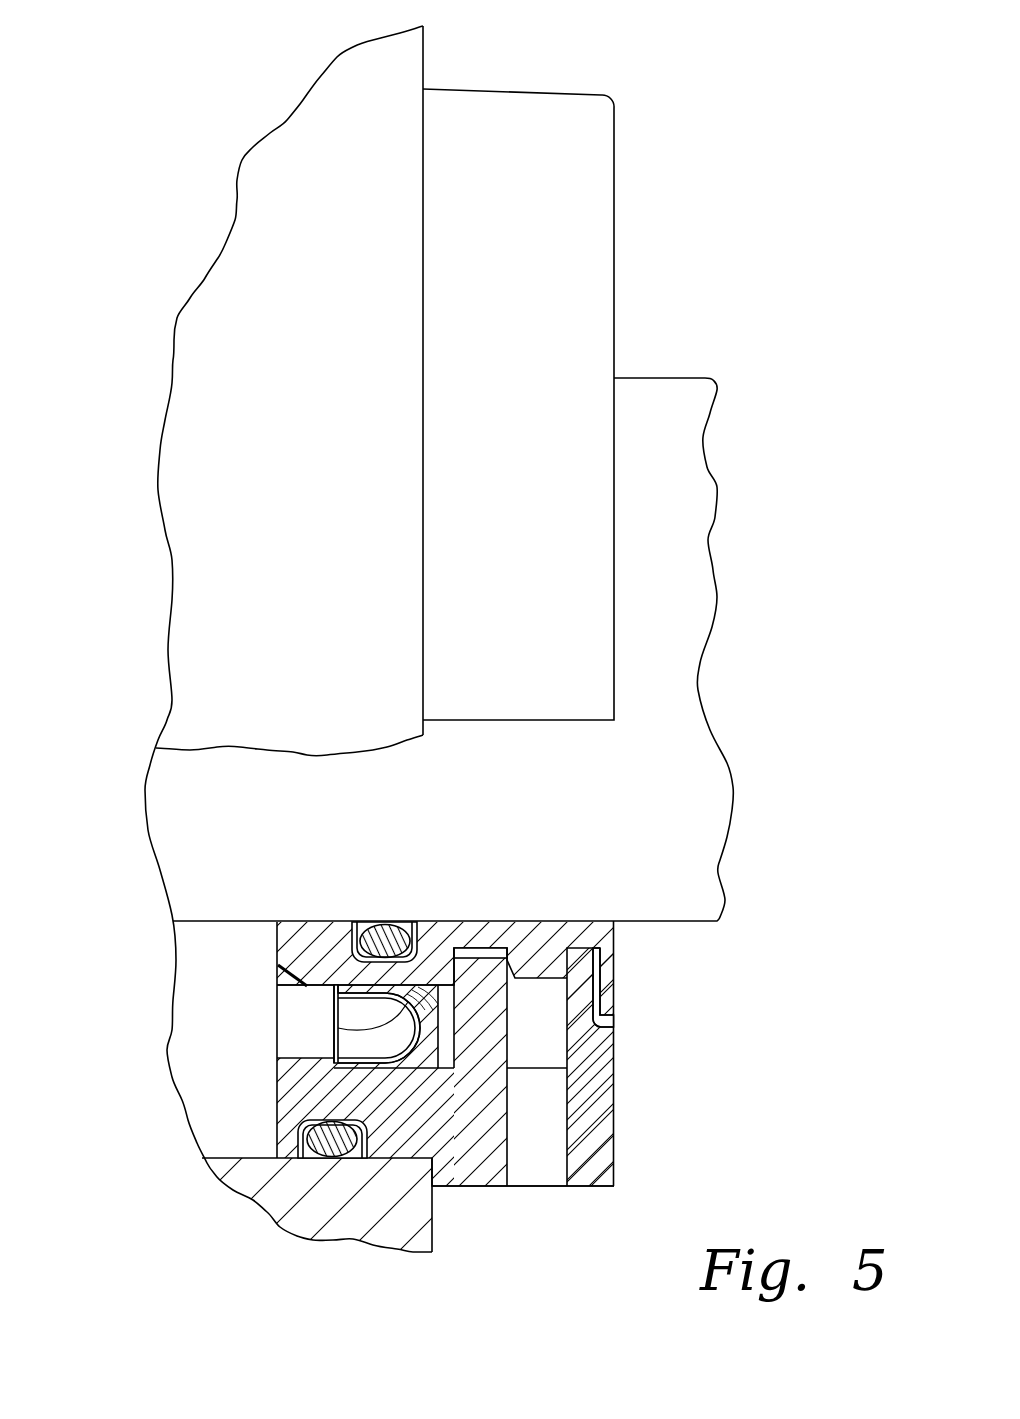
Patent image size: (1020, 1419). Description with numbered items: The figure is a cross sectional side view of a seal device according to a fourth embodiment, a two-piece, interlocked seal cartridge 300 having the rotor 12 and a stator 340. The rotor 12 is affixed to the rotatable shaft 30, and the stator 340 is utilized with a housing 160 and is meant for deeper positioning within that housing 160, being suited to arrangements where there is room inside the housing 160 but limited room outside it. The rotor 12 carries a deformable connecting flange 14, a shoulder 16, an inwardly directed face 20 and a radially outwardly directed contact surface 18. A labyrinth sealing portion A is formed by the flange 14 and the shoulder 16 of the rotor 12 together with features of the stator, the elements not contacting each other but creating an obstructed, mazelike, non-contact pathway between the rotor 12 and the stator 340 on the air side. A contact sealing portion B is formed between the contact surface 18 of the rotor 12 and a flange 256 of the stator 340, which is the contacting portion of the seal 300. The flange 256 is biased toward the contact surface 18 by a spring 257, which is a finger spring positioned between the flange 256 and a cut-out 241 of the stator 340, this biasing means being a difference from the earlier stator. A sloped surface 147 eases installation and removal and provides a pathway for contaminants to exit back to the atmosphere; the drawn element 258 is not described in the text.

The seal cartridge 300 is at (671, 130).
The rotatable shaft 30 is at (667, 392).
The housing 160 is at (300, 436).
The stator 340 is at (542, 425).
The shoulder 16 is at (399, 993).
The inwardly directed face 20 is at (554, 922).
The connecting flange 14 is at (613, 957).
The rotor 12 is at (322, 955).
The radially outwardly directed surface 18 is at (300, 987).
The flange 256 is at (325, 990).
The spring 257 is at (337, 1025).
The cut-out 241 is at (276, 1040).
The O-ring 258 is at (277, 1109).
The sloped surface 147 is at (602, 1187).
The labyrinth sealing portion A is at (477, 1011).
The contact sealing portion B is at (332, 950).